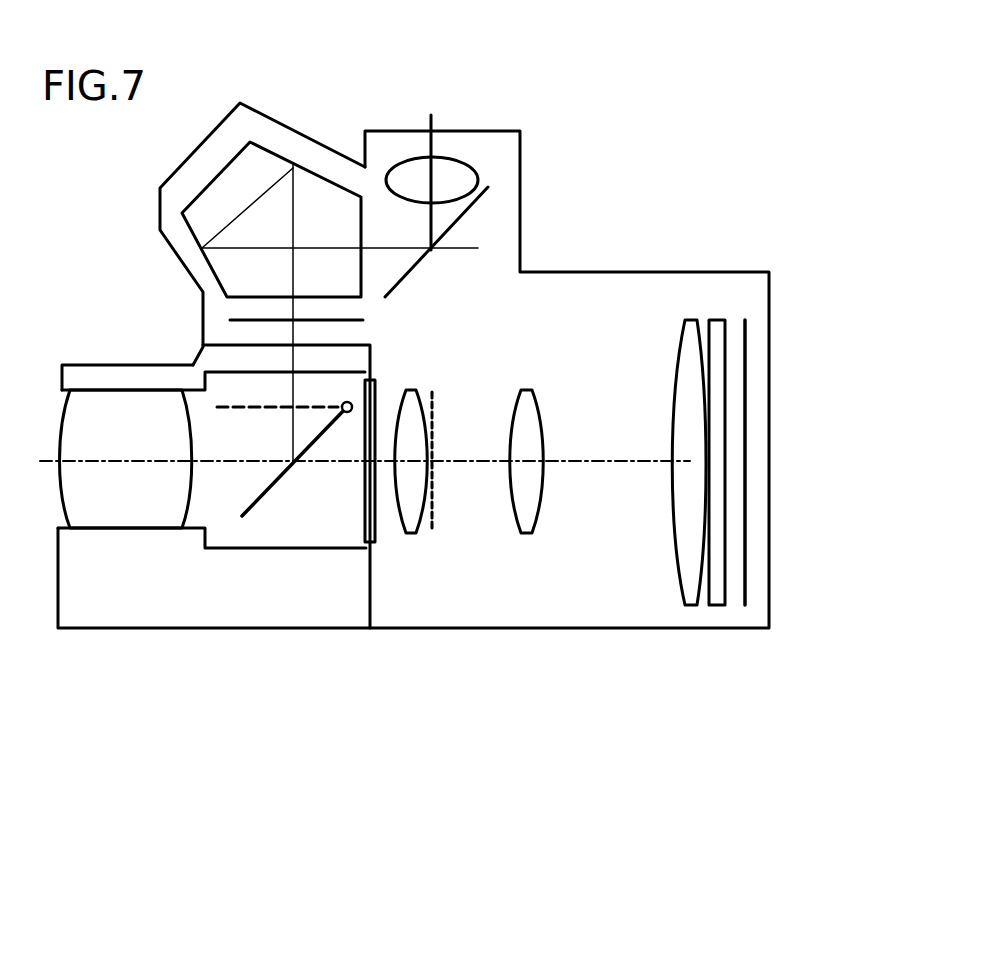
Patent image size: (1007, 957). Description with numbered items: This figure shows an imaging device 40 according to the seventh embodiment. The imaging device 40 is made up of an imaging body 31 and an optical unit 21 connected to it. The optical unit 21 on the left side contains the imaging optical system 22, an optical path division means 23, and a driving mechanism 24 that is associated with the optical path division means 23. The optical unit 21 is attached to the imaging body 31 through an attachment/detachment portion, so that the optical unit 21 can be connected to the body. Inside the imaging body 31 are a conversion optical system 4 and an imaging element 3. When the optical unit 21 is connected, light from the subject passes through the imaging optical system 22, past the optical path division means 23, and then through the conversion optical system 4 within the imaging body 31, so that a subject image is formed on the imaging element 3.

The imaging element 3 is at (762, 668).
The conversion optical system 4 is at (592, 722).
The optical unit 21 is at (78, 370).
The imaging optical system 22 is at (122, 505).
The optical path division means 23 is at (268, 500).
The driving mechanism 24 is at (347, 413).
The imaging body 31 is at (618, 310).
The imaging device 40 is at (562, 86).